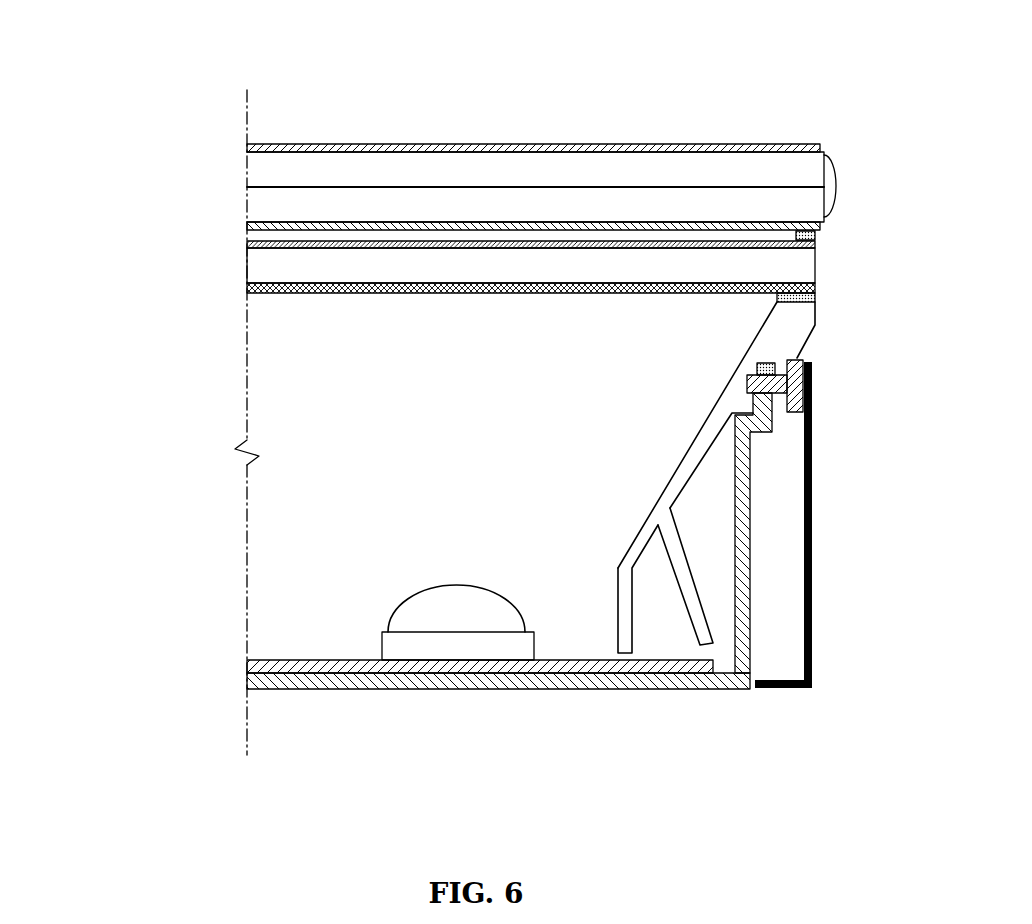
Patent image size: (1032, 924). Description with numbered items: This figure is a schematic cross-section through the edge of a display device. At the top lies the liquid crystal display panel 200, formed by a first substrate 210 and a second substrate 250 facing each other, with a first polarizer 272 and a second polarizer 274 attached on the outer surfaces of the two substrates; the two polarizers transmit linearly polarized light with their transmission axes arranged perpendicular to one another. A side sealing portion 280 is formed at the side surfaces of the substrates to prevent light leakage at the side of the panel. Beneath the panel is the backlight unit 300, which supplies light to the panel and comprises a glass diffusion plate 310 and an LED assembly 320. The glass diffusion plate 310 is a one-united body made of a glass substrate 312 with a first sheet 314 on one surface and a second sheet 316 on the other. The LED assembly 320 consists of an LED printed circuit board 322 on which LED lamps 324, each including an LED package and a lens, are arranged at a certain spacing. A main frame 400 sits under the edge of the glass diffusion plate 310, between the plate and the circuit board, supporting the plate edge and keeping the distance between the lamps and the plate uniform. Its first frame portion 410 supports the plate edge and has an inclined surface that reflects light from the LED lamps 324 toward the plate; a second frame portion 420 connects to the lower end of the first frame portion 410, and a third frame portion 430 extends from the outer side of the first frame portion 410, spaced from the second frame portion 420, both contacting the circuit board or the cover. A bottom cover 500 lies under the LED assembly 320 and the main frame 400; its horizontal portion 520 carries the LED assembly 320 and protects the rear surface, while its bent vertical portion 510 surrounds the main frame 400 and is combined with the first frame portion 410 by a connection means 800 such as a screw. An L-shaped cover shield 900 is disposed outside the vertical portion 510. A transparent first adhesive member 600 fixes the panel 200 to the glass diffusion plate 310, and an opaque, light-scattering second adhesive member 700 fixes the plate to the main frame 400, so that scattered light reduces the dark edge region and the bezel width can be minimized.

The liquid crystal display panel 200 is at (468, 62).
The first substrate 210 is at (528, 205).
The second substrate 250 is at (597, 172).
The first polarizer 272 is at (447, 222).
The second polarizer 274 is at (666, 148).
The side sealing portion 280 is at (834, 185).
The backlight unit 300 is at (100, 268).
The glass diffusion plate 310 is at (157, 230).
The glass substrate 312 is at (265, 265).
The first sheet 314 is at (247, 245).
The second sheet 316 is at (247, 290).
The LED assembly 320 is at (158, 553).
The LED printed circuit board 322 is at (340, 665).
The LED lamp 324 is at (425, 610).
The main frame 400 is at (622, 394).
The first frame portion 410 is at (692, 468).
The second frame portion 420 is at (622, 608).
The third frame portion 430 is at (671, 545).
The bottom cover 500 is at (670, 785).
The vertical portion 510 is at (770, 622).
The horizontal portion 520 is at (643, 690).
The first adhesive member 600 is at (817, 235).
The second adhesive member 700 is at (817, 298).
The connection means 800 is at (813, 378).
The cover shield 900 is at (813, 433).